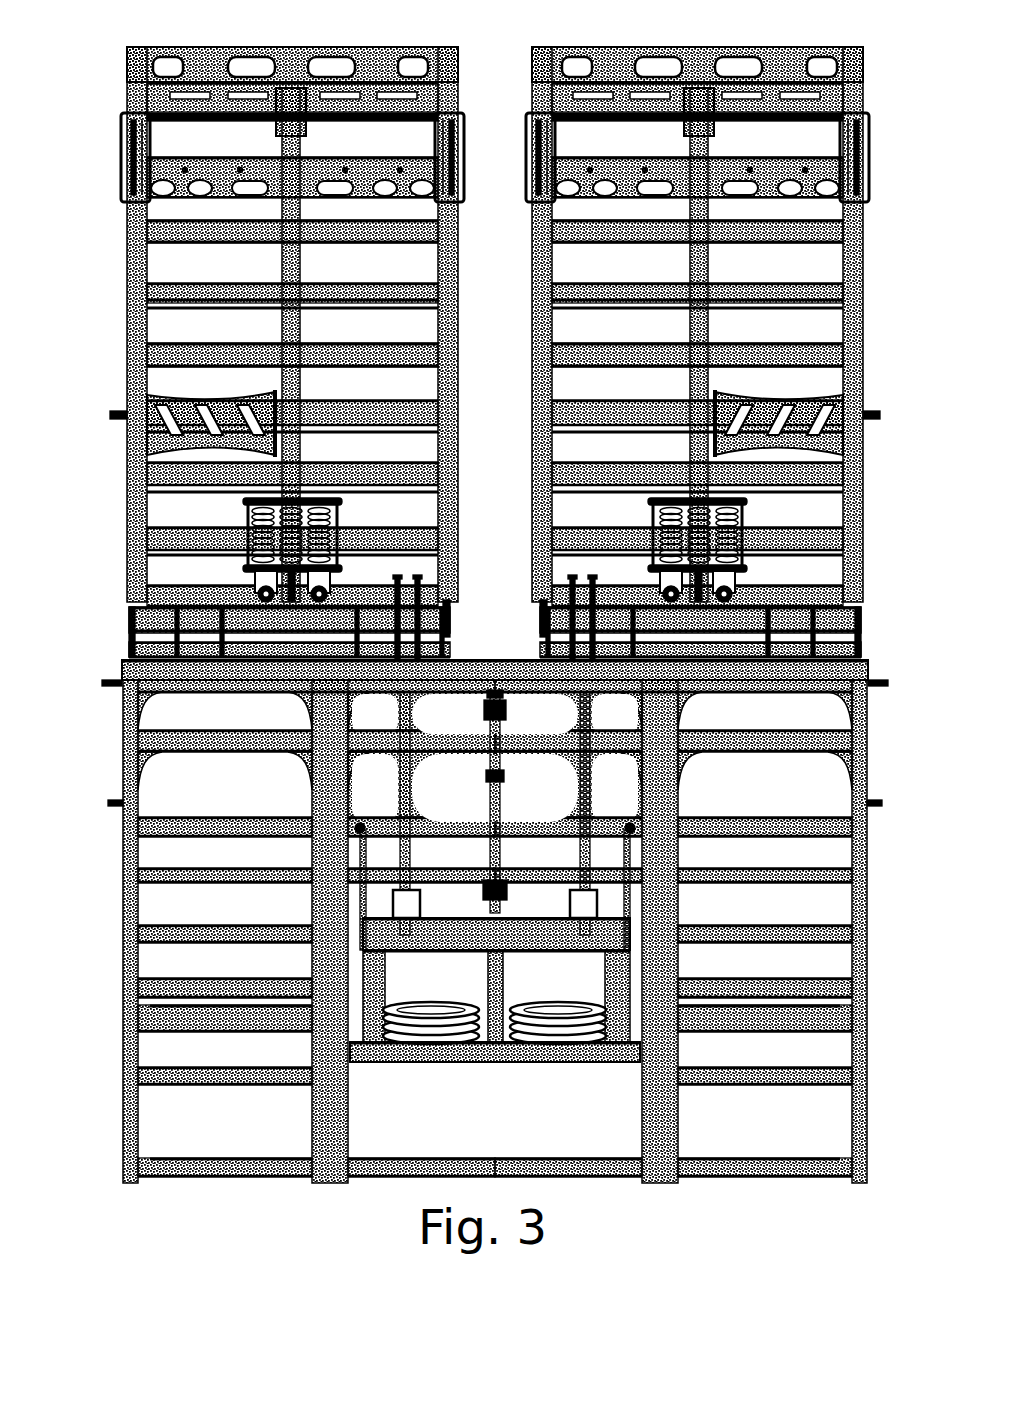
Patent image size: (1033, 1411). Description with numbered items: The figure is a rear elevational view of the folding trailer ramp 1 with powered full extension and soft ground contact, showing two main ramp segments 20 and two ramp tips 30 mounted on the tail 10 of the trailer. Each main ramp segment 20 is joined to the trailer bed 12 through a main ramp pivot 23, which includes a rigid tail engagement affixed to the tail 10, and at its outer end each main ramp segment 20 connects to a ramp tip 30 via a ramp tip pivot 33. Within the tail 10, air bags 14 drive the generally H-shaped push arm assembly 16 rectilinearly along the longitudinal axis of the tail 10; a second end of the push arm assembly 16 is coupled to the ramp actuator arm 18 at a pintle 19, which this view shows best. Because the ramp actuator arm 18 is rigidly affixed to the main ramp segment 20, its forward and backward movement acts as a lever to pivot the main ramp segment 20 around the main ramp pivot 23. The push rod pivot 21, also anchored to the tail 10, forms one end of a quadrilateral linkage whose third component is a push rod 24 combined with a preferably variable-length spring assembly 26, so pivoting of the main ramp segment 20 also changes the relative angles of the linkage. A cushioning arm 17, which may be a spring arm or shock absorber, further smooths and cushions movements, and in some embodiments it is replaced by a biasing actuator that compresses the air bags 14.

The folding trailer ramp 1 is at (489, 646).
The tail 10 is at (458, 955).
The trailer bed 12 is at (123, 1093).
The air bags 14 is at (491, 1050).
The push arm assembly 16 is at (400, 803).
The cushioning arm 17 is at (588, 803).
The ramp actuator arm 18 is at (570, 578).
The pintle 19 is at (553, 615).
The main ramp segment 20 is at (497, 338).
The push rod pivot 21 is at (260, 600).
The main ramp pivot 23 is at (122, 641).
The push rod 24 is at (693, 328).
The spring assembly 26 is at (647, 512).
The ramp tip 30 is at (118, 58).
The ramp tip pivot 33 is at (121, 150).